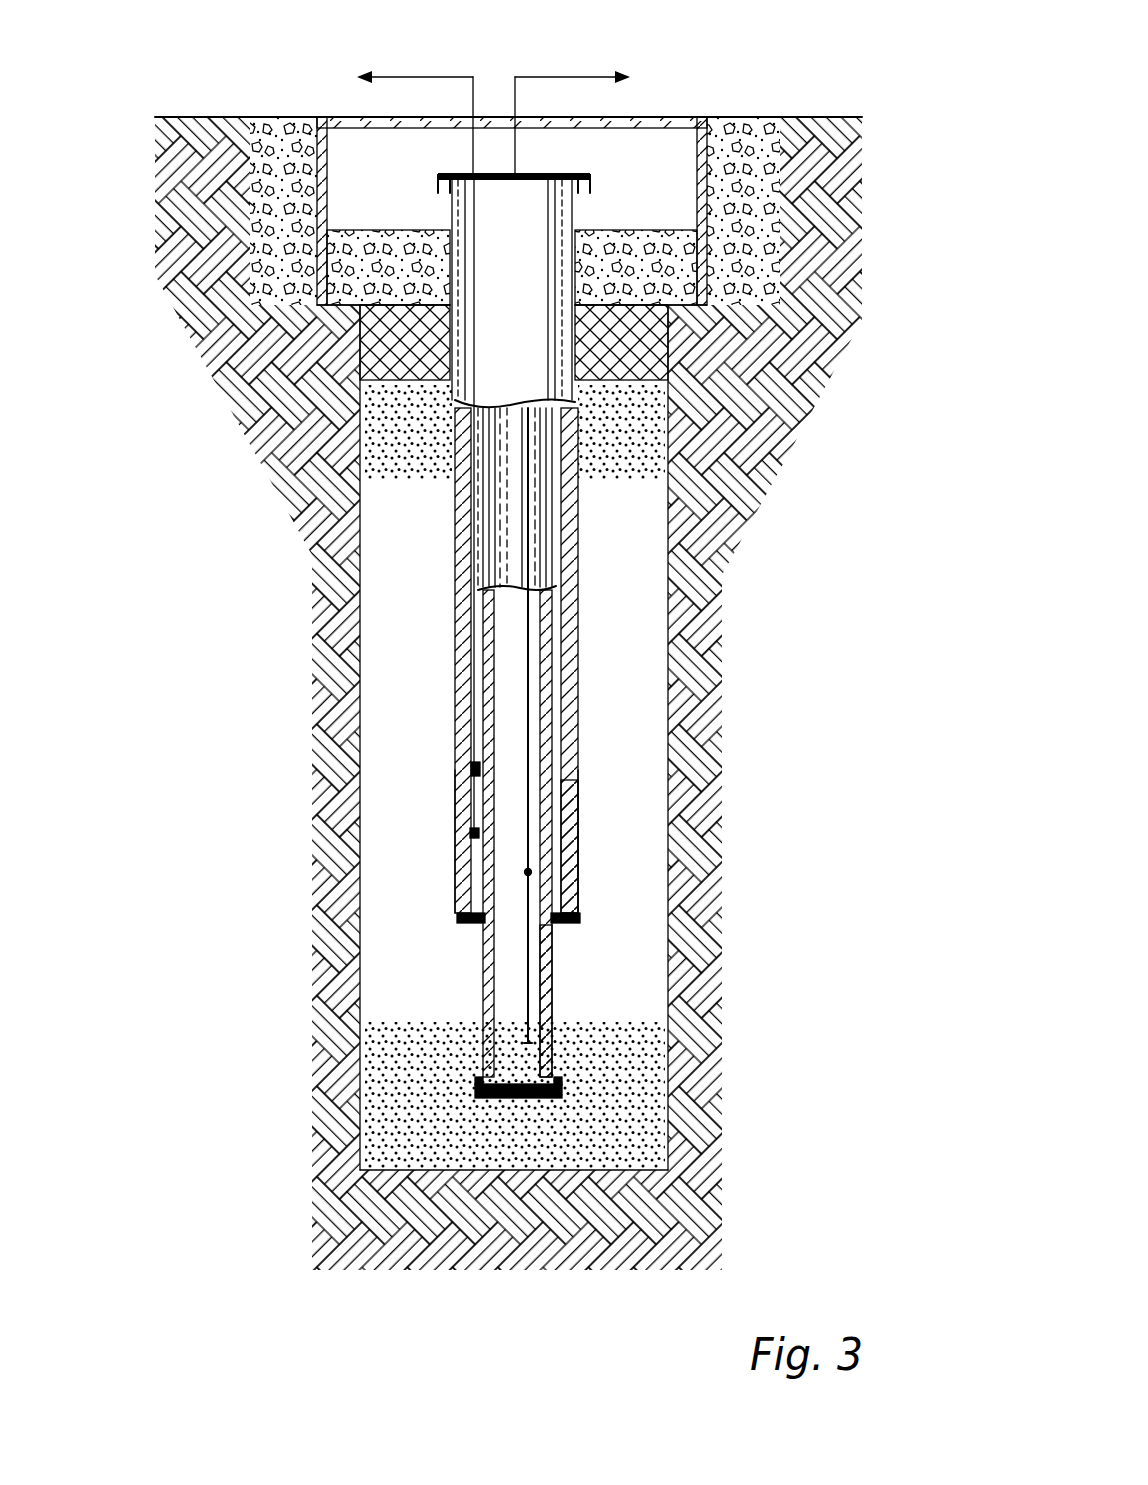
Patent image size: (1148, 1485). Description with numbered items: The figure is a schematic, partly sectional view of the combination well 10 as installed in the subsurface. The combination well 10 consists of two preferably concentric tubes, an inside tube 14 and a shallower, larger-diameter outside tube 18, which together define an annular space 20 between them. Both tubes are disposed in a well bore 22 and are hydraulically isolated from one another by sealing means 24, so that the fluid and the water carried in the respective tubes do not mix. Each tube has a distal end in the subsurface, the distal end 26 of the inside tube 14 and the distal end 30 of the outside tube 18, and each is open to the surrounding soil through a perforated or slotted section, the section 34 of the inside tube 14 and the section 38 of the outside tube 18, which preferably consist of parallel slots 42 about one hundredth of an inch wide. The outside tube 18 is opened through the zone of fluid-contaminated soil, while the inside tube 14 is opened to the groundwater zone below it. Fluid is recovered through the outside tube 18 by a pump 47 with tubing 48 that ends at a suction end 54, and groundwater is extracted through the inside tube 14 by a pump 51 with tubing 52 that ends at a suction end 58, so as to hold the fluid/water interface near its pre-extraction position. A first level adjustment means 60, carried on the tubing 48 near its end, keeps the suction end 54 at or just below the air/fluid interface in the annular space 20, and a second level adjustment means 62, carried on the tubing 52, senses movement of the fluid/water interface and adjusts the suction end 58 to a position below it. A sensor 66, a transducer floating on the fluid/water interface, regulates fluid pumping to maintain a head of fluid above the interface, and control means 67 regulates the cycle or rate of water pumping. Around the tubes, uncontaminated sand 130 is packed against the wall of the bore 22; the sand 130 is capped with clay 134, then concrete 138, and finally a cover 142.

The combination well 10 is at (440, 628).
The inside tube 14 is at (661, 753).
The outside tube 18 is at (544, 675).
The annular space 20 is at (557, 578).
The well bore 22 is at (672, 512).
The sealing means 24 is at (462, 918).
The distal end of inside tube 26 is at (567, 1087).
The distal end of outside tube 30 is at (460, 916).
The perforated section of inside tube 34 is at (555, 980).
The perforated section of outside tube 38 is at (580, 813).
The slots 42 is at (675, 928).
The pump 47 is at (371, 79).
The tubing 48 is at (466, 77).
The pump 51 is at (610, 79).
The tubing 52 is at (545, 77).
The suction end 54 is at (337, 815).
The suction end 58 is at (525, 1043).
The first level adjustment means 60 is at (475, 763).
The second level adjustment means 62 is at (668, 864).
The sensor 66 is at (478, 835).
The control means 67 is at (532, 872).
The sand 130 is at (622, 447).
The clay 134 is at (668, 345).
The concrete 138 is at (665, 258).
The cover 142 is at (712, 214).